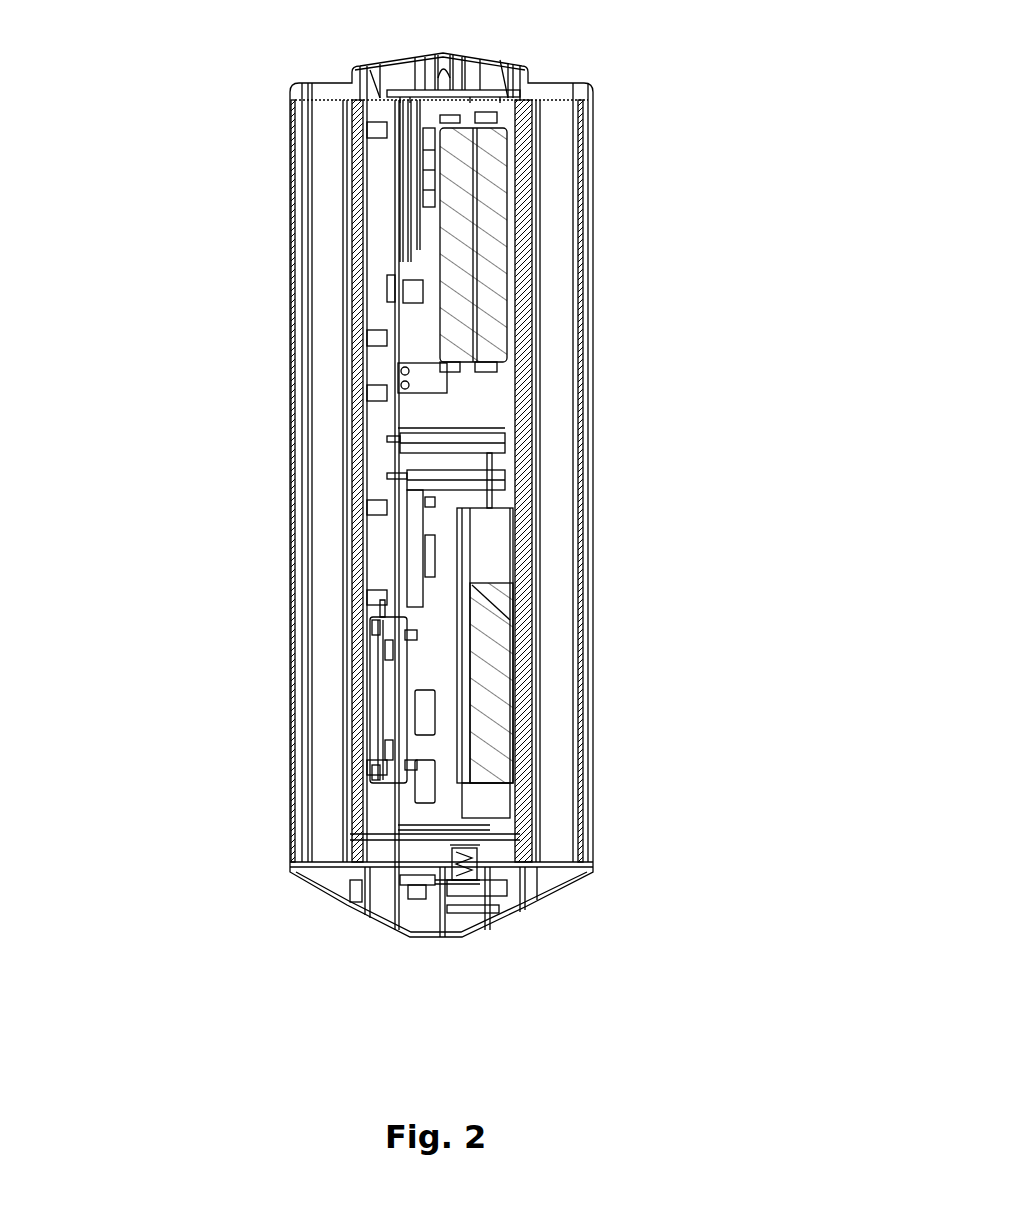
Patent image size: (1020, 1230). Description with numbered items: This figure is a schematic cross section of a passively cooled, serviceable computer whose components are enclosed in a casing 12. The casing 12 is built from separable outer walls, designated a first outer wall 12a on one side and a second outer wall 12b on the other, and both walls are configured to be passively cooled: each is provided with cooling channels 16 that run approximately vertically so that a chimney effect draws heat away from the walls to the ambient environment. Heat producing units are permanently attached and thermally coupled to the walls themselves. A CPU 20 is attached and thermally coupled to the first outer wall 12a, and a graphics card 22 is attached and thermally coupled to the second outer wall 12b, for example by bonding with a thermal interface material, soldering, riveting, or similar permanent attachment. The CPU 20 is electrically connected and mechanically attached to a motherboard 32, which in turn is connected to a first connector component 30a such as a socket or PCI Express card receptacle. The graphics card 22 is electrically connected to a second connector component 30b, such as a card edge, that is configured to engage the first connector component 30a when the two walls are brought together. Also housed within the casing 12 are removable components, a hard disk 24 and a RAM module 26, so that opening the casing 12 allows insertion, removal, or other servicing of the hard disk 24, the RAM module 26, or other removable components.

The casing 12 is at (202, 82).
The cooling channels 16 is at (322, 195).
The first outer wall 12a is at (343, 415).
The second outer wall 12b is at (538, 420).
The motherboard 32 is at (393, 325).
The hard disk 24 is at (495, 250).
The RAM module 26 is at (500, 450).
The graphics card 22 is at (468, 730).
The CPU 20 is at (375, 680).
The first connector component 30a is at (405, 897).
The second connector component 30b is at (468, 882).